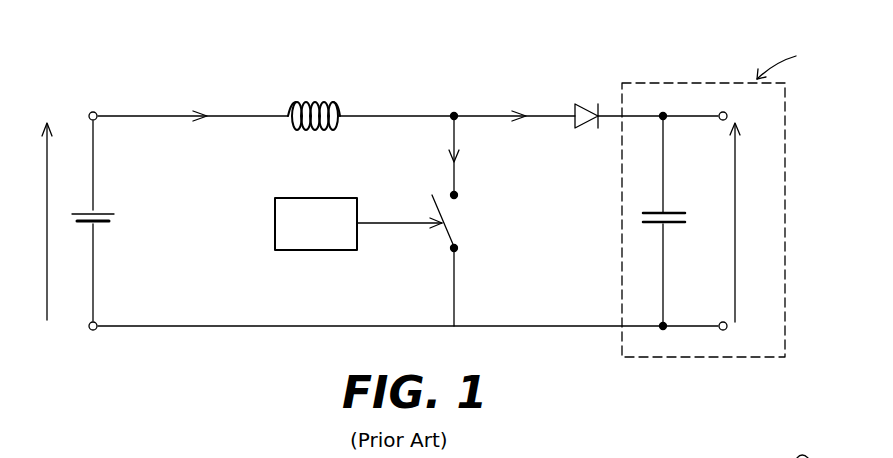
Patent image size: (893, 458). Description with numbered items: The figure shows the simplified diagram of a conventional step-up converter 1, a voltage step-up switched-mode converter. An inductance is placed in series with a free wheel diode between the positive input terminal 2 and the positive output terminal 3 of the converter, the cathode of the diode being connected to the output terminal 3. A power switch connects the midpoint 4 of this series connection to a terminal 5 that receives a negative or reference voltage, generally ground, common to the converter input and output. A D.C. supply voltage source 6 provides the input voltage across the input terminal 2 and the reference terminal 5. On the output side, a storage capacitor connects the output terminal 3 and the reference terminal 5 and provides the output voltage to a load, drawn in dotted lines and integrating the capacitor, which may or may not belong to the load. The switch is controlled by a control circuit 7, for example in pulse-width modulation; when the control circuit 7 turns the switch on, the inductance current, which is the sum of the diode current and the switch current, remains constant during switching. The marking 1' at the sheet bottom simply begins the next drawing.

The step-up converter 1 is at (414, 182).
The boost converter circuit (second figure) 1' is at (57, 440).
The positive input terminal 2 is at (97, 112).
The positive output terminal 3 is at (720, 112).
The midpoint 4 is at (452, 113).
The reference voltage terminal 5 is at (97, 322).
The D.C. supply voltage source 6 is at (99, 213).
The control circuit 7 is at (300, 252).